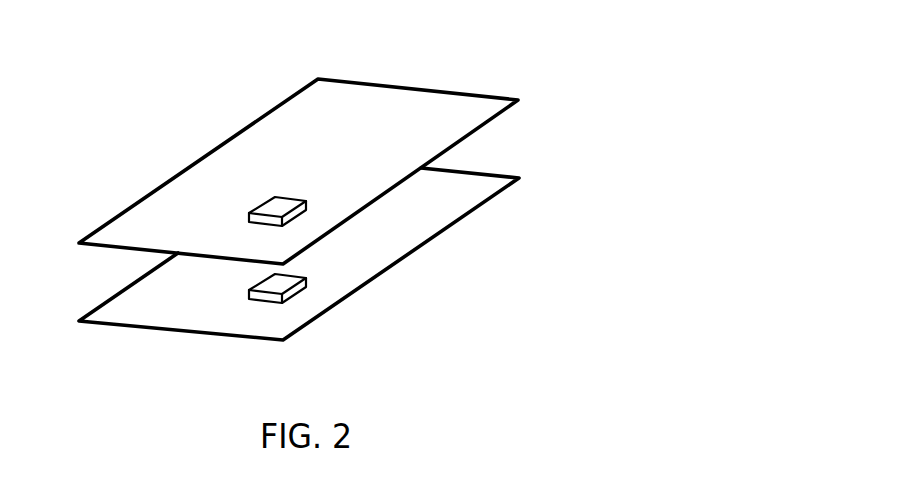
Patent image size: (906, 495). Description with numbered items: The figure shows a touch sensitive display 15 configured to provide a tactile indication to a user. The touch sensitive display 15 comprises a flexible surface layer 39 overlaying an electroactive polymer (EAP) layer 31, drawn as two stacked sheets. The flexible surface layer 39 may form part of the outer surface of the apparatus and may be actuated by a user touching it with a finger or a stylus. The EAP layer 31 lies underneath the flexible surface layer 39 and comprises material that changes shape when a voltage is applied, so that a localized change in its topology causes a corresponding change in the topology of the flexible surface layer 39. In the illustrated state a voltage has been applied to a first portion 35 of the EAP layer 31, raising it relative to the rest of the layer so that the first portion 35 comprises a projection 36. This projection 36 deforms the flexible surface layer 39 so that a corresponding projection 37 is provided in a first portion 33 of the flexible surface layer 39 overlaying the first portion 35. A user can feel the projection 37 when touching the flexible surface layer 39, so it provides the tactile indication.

The touch sensitive display 15 is at (165, 158).
The flexible surface layer 39 is at (476, 116).
The electroactive polymer (EAP) layer 31 is at (437, 213).
The first portion of the flexible surface layer 33 is at (295, 217).
The first portion of the EAP layer 35 is at (309, 303).
The projection 37 is at (262, 231).
The projection 36 is at (267, 301).